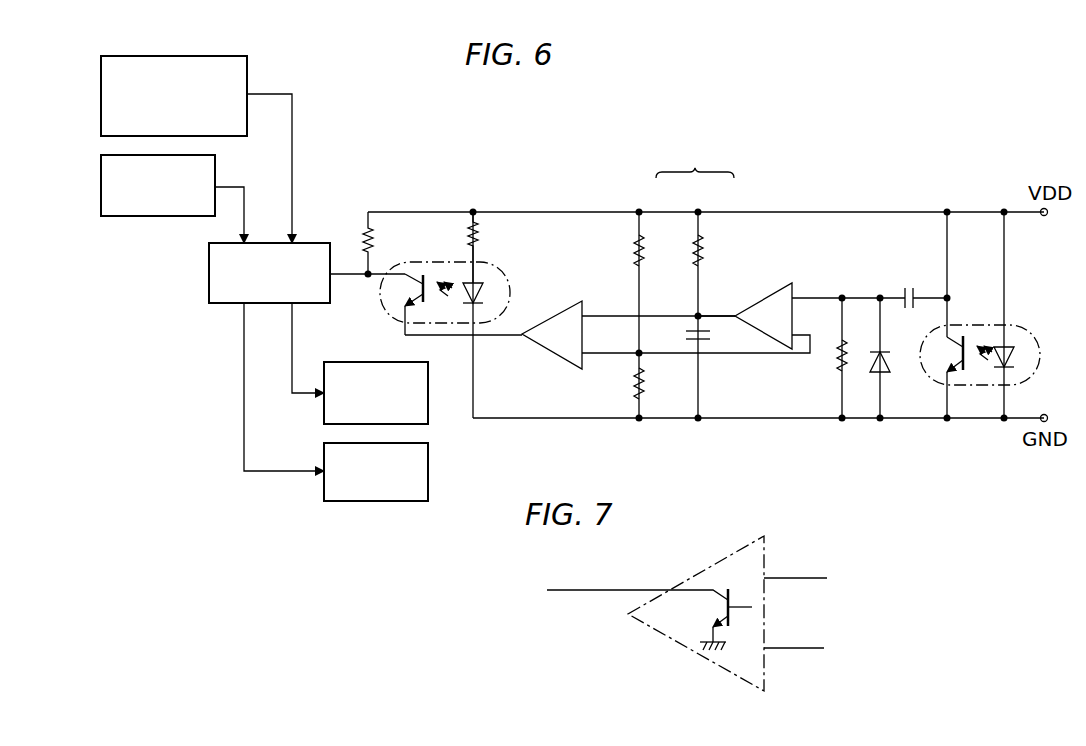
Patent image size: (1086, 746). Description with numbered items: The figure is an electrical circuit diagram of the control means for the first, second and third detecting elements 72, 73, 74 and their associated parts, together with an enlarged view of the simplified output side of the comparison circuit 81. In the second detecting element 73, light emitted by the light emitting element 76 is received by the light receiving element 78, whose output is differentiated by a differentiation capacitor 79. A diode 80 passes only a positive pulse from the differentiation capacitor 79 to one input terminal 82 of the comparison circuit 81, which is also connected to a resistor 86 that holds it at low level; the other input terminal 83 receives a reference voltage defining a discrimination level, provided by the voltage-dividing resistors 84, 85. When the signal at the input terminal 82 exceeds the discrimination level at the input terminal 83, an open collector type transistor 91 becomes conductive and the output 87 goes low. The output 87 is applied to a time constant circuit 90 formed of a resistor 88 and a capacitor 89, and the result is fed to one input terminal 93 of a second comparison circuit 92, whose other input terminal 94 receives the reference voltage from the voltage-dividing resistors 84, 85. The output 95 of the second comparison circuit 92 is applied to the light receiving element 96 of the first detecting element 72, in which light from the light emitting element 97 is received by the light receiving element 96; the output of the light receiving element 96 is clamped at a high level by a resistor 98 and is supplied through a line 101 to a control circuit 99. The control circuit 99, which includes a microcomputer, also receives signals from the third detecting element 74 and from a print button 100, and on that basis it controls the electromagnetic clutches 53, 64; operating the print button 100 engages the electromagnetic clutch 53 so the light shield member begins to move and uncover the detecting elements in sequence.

In FIG. 6, the third detecting element 74 is at (249, 62).
In FIG. 6, the print button 100 is at (216, 162).
In FIG. 6, the control circuit 99 is at (209, 290).
In FIG. 6, the line 101 is at (352, 284).
In FIG. 6, the resistor 98 is at (362, 234).
In FIG. 6, the first detecting element 72 is at (512, 299).
In FIG. 6, the light receiving element 96 is at (424, 275).
In FIG. 6, the light emitting element 97 is at (478, 284).
In FIG. 6, the second comparison circuit 92 is at (548, 360).
In FIG. 6, the output 95 is at (495, 338).
In FIG. 6, the input terminal 93 is at (607, 316).
In FIG. 6, the input terminal 94 is at (605, 356).
In FIG. 6, the voltage-dividing resistor 84 is at (633, 255).
In FIG. 6, the voltage-dividing resistor 85 is at (636, 420).
In FIG. 6, the time constant circuit 90 is at (694, 240).
In FIG. 6, the capacitor 89 is at (690, 330).
In FIG. 6, the resistor 88 is at (702, 245).
In FIG. 6, the output 87 is at (720, 316).
In FIG. 7, the output 87 is at (611, 589).
In FIG. 6, the comparison circuit 81 is at (763, 301).
In FIG. 7, the comparison circuit 81 is at (912, 608).
In FIG. 6, the input terminal 82 is at (818, 298).
In FIG. 7, the input terminal 82 is at (794, 578).
In FIG. 6, the input terminal 83 is at (798, 356).
In FIG. 7, the input terminal 83 is at (795, 648).
In FIG. 6, the differentiation capacitor 79 is at (902, 290).
In FIG. 6, the resistor 86 is at (840, 374).
In FIG. 6, the diode 80 is at (878, 374).
In FIG. 6, the second detecting element 73 is at (1014, 334).
In FIG. 6, the light receiving element 78 is at (965, 344).
In FIG. 6, the light emitting element 76 is at (1012, 364).
In FIG. 6, the electromagnetic clutch 53 is at (428, 396).
In FIG. 6, the electromagnetic clutch 64 is at (428, 475).
In FIG. 7, the open collector type transistor 91 is at (722, 600).